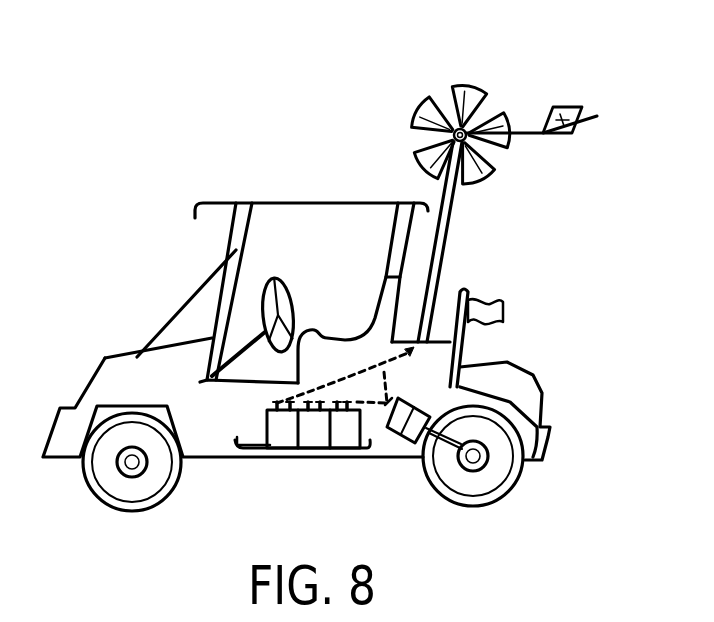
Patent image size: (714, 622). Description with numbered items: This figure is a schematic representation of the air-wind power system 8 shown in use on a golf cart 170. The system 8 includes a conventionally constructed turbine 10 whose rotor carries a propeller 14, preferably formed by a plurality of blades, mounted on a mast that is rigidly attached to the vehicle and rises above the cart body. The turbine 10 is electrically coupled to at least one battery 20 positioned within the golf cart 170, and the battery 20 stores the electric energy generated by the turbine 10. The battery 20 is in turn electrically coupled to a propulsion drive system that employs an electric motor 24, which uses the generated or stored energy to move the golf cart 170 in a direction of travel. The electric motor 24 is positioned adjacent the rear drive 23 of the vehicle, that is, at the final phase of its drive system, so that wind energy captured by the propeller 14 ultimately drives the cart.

The golf cart 170 is at (90, 372).
The propeller 14 is at (480, 80).
The turbine 10 is at (567, 83).
The air-wind power system 8 is at (610, 223).
The battery 20 is at (283, 446).
The electric motor 24 is at (423, 437).
The rear drive 23 is at (480, 463).